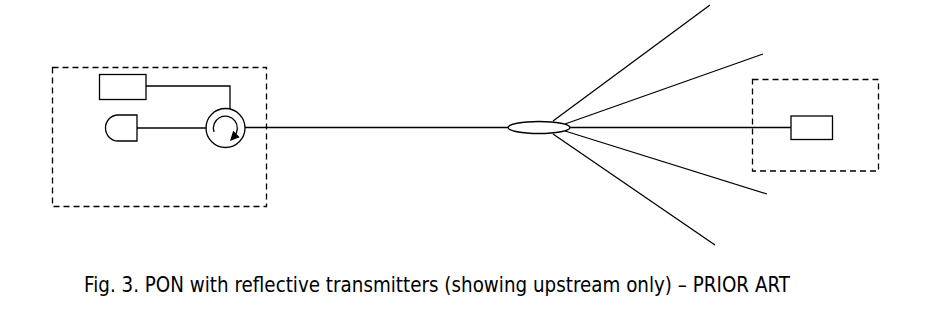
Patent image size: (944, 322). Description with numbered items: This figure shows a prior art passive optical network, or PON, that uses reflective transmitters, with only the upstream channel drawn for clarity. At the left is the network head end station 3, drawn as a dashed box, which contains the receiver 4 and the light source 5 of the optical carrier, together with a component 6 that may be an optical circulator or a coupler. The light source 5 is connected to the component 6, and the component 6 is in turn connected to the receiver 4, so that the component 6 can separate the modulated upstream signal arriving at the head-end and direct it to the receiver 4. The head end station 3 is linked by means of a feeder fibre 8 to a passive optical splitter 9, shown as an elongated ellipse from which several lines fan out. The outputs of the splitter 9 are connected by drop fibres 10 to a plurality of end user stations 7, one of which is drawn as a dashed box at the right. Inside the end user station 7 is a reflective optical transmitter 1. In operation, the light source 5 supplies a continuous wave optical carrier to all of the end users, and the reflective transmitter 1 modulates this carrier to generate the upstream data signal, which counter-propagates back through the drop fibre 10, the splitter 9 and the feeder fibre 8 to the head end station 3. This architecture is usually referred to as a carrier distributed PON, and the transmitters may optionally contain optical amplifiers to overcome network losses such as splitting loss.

The reflective transmitter 1 is at (812, 114).
The network head end station 3 is at (160, 137).
The receiver 4 is at (155, 128).
The light source 5 is at (146, 92).
The component 6 is at (225, 141).
The end user station 7 is at (816, 107).
The feeder fibre 8 is at (377, 117).
The passive optical splitter 9 is at (637, 125).
The drop fibre 10 is at (680, 113).